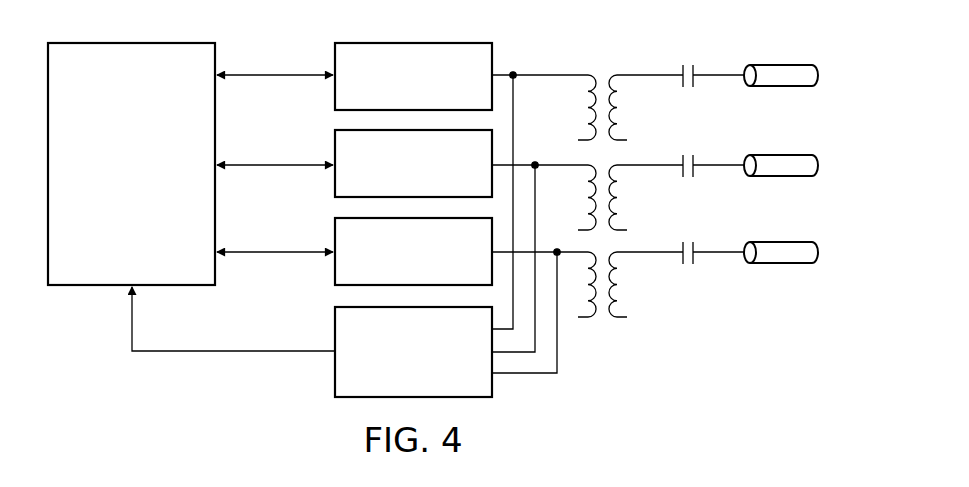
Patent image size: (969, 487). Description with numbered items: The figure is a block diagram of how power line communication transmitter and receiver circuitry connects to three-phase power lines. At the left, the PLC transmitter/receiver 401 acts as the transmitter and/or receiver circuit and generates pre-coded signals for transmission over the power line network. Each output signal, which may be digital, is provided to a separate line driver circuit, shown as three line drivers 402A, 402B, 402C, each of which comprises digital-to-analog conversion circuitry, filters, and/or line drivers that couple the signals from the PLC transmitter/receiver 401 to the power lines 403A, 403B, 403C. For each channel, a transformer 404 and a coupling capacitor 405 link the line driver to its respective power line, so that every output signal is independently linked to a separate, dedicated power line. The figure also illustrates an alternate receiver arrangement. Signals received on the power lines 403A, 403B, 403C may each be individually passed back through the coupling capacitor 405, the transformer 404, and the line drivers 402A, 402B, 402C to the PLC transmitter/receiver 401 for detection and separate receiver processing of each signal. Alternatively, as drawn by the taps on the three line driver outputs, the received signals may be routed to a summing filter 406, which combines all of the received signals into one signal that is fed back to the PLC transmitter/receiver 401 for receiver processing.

The PLC transmitter/receiver 401 is at (111, 225).
The line driver circuit 402A is at (335, 60).
The line driver circuit 402B is at (335, 150).
The line driver circuit 402C is at (335, 266).
The power line 403A is at (780, 63).
The power line 403B is at (780, 152).
The power line 403C is at (778, 265).
The transformer 404 is at (602, 68).
The coupling capacitor 405 is at (688, 60).
The summing filter 406 is at (335, 361).